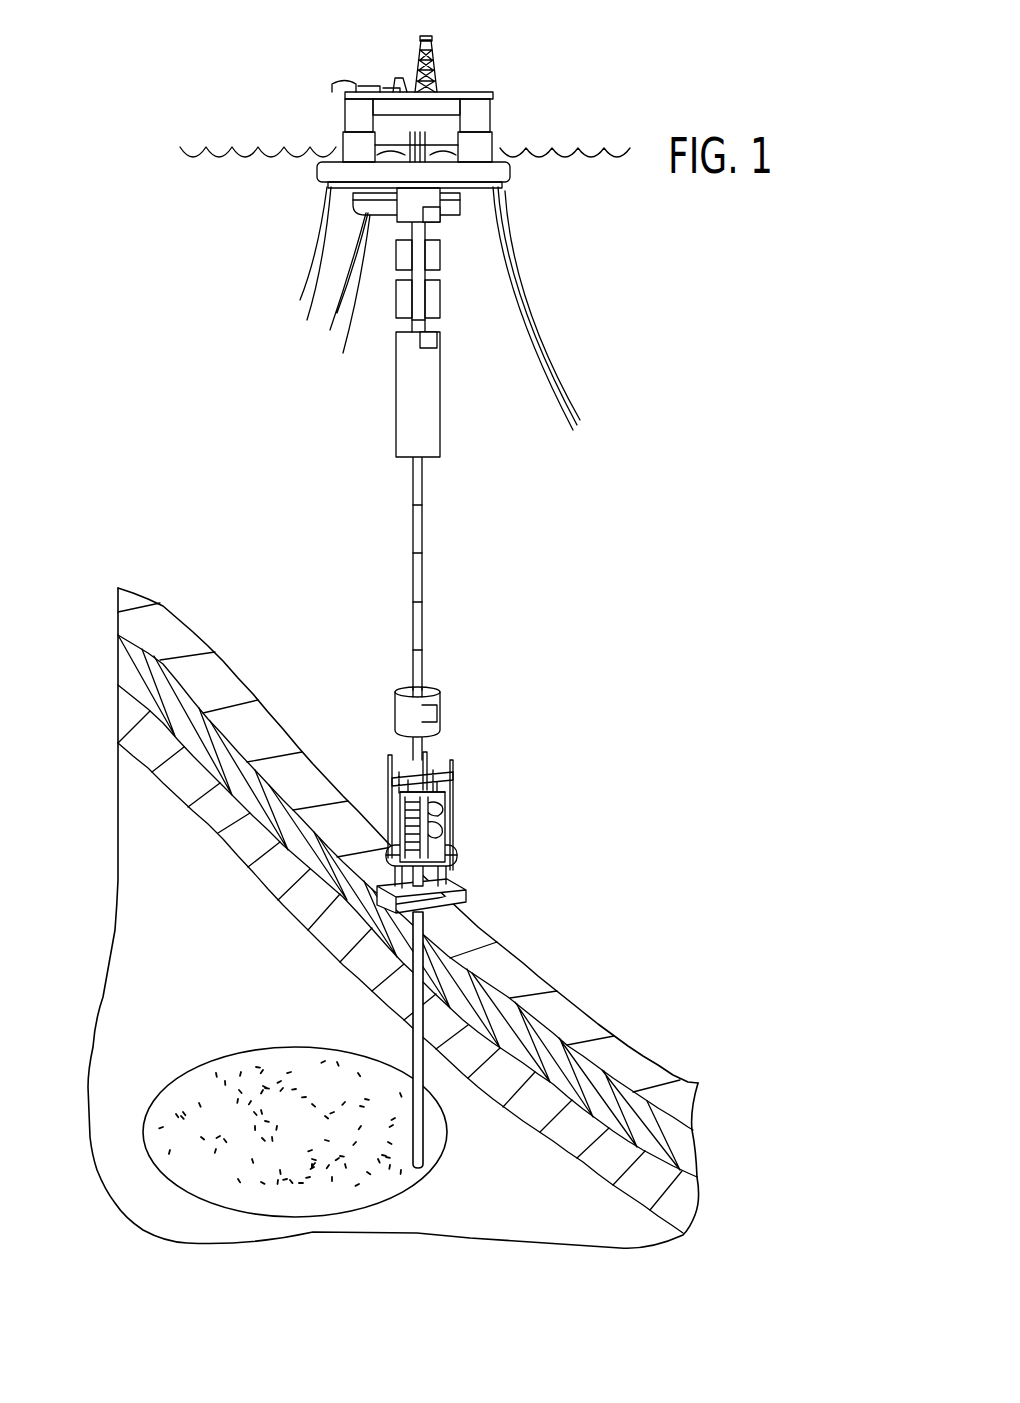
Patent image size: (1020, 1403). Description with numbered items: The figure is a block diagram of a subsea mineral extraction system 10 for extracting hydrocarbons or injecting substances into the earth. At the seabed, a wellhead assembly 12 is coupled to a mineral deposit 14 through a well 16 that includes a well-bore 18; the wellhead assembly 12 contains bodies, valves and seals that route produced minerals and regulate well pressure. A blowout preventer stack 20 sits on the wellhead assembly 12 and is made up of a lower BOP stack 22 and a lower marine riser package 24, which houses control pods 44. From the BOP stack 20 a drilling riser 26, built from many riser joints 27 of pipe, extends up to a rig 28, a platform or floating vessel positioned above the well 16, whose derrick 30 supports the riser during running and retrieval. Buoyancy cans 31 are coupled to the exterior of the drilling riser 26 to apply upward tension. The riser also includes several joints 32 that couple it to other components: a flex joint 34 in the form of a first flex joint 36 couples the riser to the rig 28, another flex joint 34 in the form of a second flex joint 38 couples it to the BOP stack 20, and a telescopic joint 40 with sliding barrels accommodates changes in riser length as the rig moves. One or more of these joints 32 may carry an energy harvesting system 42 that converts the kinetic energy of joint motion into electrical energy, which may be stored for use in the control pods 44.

The subsea mineral extraction system 10 is at (128, 202).
The wellhead assembly 12 is at (480, 900).
The mineral deposit 14 is at (223, 1070).
The well 16 is at (392, 982).
The well-bore 18 is at (417, 1057).
The blowout preventer (BOP) stack 20 is at (367, 777).
The lower BOP stack 22 is at (475, 858).
The lower marine riser package (LMRP) 24 is at (487, 775).
The drilling riser 26 is at (397, 553).
The riser joints 27 is at (448, 321).
The rig 28 is at (481, 119).
The derrick 30 is at (410, 50).
The buoyancy cans 31 is at (432, 298).
The joints 32 is at (385, 232).
The flex joint 34 is at (455, 202).
The first flex joint 36 is at (407, 207).
The second flex joint 38 is at (405, 713).
The telescopic joint 40 is at (423, 427).
The energy harvesting system 42 is at (432, 213).
The control pods 44 is at (440, 838).